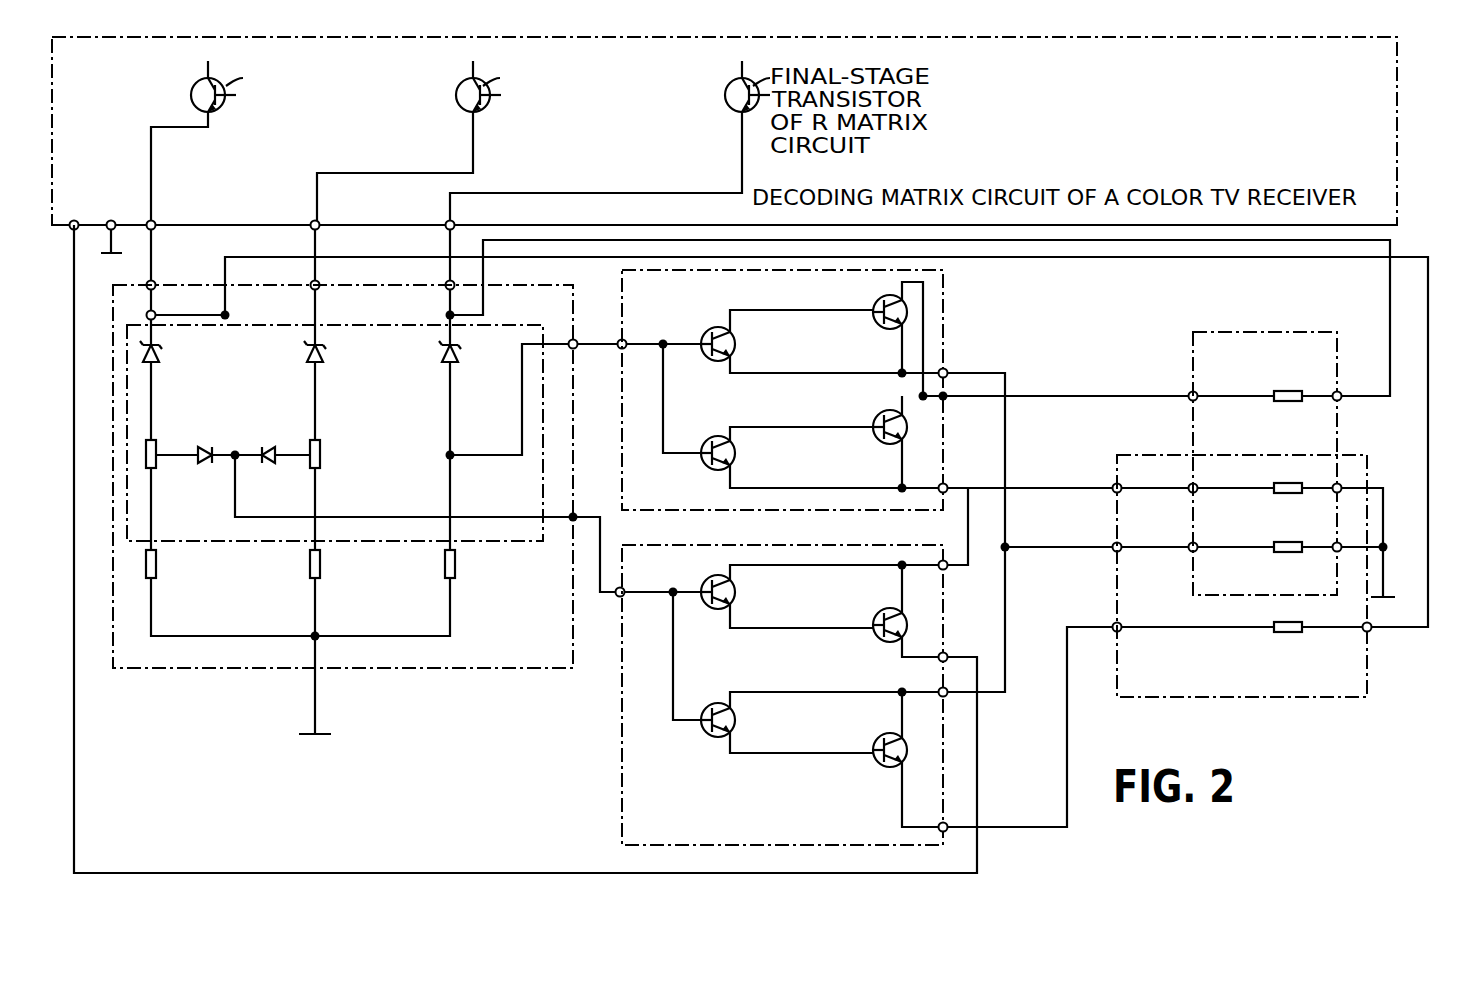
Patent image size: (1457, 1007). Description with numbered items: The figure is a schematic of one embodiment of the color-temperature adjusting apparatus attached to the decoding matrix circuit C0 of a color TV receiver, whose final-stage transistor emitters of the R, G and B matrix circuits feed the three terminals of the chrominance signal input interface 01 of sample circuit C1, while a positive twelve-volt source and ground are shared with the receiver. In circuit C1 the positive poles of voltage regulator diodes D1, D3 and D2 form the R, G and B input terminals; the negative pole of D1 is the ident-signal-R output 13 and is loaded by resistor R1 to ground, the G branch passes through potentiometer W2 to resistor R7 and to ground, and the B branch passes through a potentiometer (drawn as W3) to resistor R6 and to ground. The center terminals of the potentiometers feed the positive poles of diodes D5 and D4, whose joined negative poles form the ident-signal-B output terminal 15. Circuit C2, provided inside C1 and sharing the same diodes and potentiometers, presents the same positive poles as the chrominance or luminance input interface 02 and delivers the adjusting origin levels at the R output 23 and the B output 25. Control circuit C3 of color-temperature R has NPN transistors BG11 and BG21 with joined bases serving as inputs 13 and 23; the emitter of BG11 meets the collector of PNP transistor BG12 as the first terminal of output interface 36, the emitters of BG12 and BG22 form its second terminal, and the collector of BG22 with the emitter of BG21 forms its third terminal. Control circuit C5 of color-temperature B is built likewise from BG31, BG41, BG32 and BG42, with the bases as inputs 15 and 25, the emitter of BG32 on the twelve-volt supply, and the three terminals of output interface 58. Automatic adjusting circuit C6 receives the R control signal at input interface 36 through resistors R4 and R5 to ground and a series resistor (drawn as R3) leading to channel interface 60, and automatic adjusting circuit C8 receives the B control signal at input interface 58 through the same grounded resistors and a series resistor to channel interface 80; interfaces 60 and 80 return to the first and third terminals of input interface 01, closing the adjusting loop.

The B automatic adjusting channel interface 80 is at (274, 143).
The automatic adjusting channel interface 60 is at (487, 143).
The chrominance signal input interface 01 is at (262, 268).
The chrominance or luminance signal input interface 02 is at (788, 433).
The output interface of ident signal R / input interface of ident signal R 13 is at (575, 384).
The R output interface of adjusting origin level / input interface of adjusting orig 23 is at (639, 398).
The output terminal of ident signal B / input interface of ident signal B 15 is at (468, 538).
The B output interface of adjusting origin level / input interface of adjusting orig 25 is at (639, 656).
The output interface of the R control signal / input interface of the R control sign 36 is at (1167, 517).
The output interface of the B control signal / input interface of the B control sign 58 is at (720, 549).
The decoding matrix circuit of a color TV receiver C0 is at (1380, 98).
The sample circuit C1 is at (410, 668).
The circuit of adjusting origin level C2 is at (515, 541).
The control circuit of the color-temperature R C3 is at (622, 272).
The control circuit of the color-temperature B C5 is at (622, 768).
The automatic adjusting circuit of color-temperature state R C6 is at (1242, 318).
The automatic adjusting circuit of the color-temperature state B C8 is at (1245, 697).
The voltage regulator diode D1 is at (433, 356).
The voltage regulator diode D2 is at (166, 356).
The voltage regulator diode D3 is at (330, 356).
The diode D4 is at (195, 474).
The diode D5 is at (272, 474).
The potentiometer W2 is at (294, 444).
The resistor W3 is at (168, 444).
The resistor R1 is at (436, 567).
The resistor R3 is at (1289, 411).
The resistor R4 is at (1289, 503).
The resistor R5 is at (1289, 564).
The resistor R6 is at (165, 567).
The resistor R7 is at (300, 567).
The NPN transistor BG11 is at (822, 457).
The PNP transistor BG12 is at (872, 442).
The NPN transistor BG21 is at (822, 343).
The PNP transistor BG22 is at (886, 339).
The NPN transistor BG31 is at (822, 596).
The PNP transistor BG32 is at (879, 611).
The NPN transistor BG41 is at (822, 723).
The PNP transistor BG42 is at (879, 759).